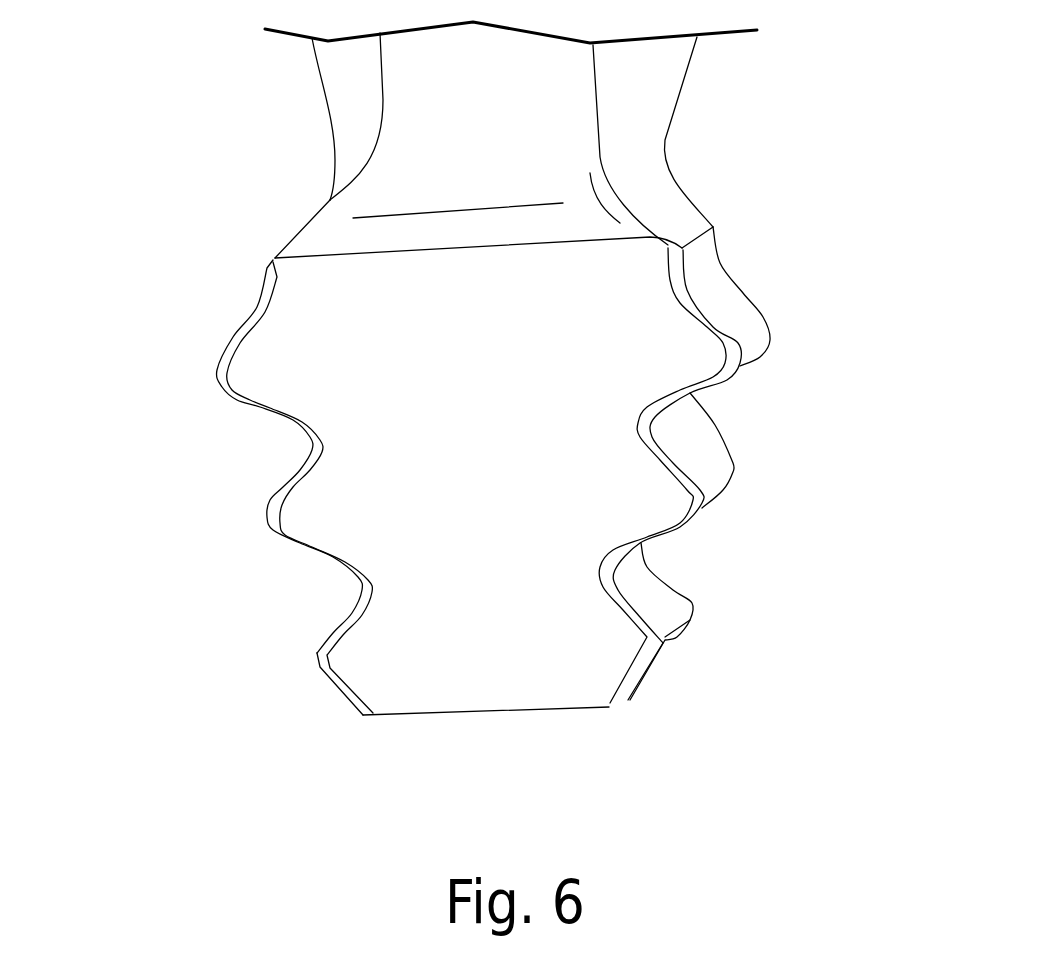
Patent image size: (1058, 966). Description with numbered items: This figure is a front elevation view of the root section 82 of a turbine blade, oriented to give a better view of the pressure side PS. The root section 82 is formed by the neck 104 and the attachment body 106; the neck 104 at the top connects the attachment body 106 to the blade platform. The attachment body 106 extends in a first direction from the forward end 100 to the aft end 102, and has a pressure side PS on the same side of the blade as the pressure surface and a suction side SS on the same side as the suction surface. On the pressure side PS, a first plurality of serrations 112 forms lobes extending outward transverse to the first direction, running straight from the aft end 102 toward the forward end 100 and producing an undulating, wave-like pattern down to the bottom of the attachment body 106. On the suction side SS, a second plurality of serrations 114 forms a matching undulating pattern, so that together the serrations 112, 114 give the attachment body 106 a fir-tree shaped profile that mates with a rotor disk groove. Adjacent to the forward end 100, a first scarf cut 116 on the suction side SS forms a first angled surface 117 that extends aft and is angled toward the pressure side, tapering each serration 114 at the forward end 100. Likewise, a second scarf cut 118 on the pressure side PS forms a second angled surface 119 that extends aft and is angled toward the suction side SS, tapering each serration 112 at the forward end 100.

The forward end 100 is at (485, 443).
The root section 82 is at (298, 232).
The neck 104 is at (642, 78).
The aft end 102 is at (715, 243).
The second scarf cut 118 is at (677, 277).
The first plurality of serrations 112 is at (658, 588).
The second angled surface 119 is at (647, 622).
The second plurality of serrations 114 is at (315, 652).
The first scarf cut 116 is at (260, 312).
The first angled surface 117 is at (337, 680).
The attachment body 106 is at (497, 639).
The suction side SS is at (168, 387).
The pressure side PS is at (806, 502).